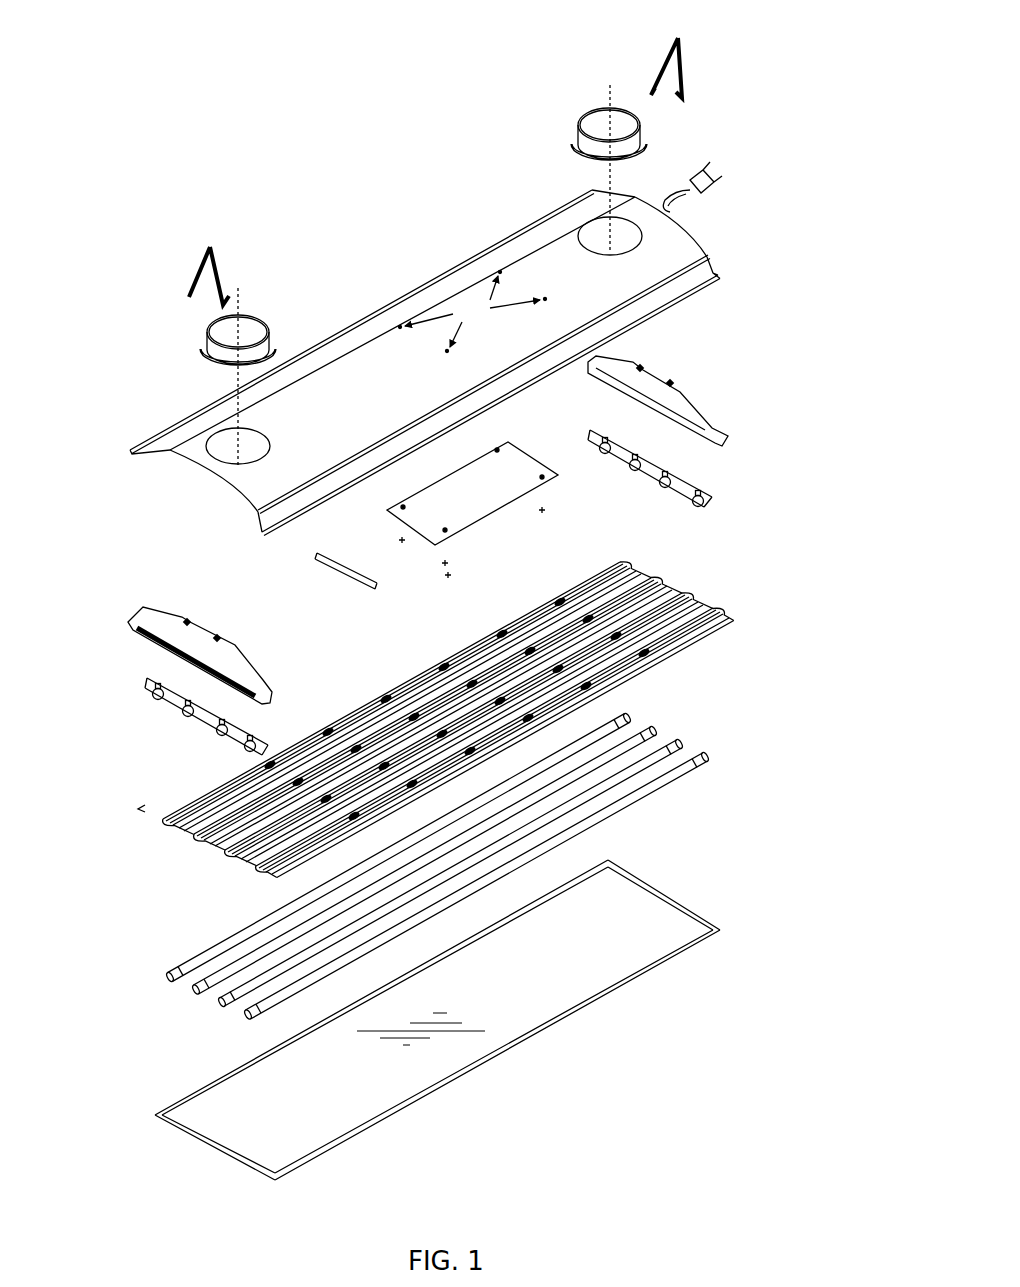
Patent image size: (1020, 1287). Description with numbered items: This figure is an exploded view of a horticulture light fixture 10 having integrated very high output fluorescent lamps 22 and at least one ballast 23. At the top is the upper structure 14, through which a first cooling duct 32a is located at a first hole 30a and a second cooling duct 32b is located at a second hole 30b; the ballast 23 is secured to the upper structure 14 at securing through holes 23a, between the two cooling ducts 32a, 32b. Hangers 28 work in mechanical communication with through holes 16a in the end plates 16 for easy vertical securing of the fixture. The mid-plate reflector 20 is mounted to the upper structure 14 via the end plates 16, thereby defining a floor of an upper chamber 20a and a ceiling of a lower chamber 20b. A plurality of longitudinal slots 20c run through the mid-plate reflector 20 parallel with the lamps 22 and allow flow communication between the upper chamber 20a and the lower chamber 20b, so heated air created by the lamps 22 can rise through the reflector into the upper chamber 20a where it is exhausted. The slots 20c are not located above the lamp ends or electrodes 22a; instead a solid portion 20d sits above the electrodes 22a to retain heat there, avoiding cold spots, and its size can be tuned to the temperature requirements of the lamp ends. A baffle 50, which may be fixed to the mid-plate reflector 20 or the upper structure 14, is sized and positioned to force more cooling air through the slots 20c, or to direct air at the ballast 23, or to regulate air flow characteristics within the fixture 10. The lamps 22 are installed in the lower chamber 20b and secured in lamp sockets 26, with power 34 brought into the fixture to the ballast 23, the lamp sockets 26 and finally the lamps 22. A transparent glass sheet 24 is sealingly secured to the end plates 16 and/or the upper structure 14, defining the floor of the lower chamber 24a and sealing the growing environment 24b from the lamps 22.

The horticulture light fixture 10 is at (262, 90).
The upper structure 14 is at (425, 310).
The end plates 16 is at (432, 517).
The through holes 16a is at (670, 382).
The mid-plate reflector 20 is at (453, 732).
The upper chamber 20a is at (708, 606).
The lower chamber 20b is at (682, 644).
The longitudinal slots 20c is at (553, 594).
The solid portion 20d is at (202, 773).
The very high output fluorescent lamp 22 is at (406, 884).
The lamp ends or electrodes 22a is at (170, 962).
The ballast 23 is at (513, 467).
The securing through holes 23a is at (473, 312).
The transparent glass sheet 24 is at (445, 1033).
The floor of the lower chamber 24a is at (662, 906).
The growing environment 24b is at (675, 958).
The lamp sockets 26 is at (712, 486).
The hangers 28 is at (213, 248).
The first hole 30a is at (258, 435).
The second hole 30b is at (630, 221).
The first cooling duct 32a is at (264, 320).
The second cooling duct 32b is at (580, 118).
The power 34 is at (704, 177).
The baffle 50 is at (318, 571).